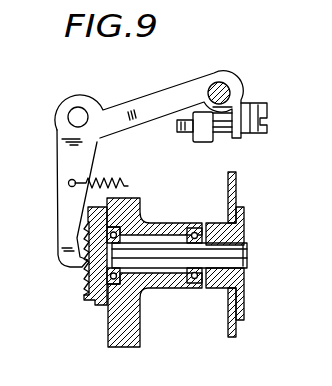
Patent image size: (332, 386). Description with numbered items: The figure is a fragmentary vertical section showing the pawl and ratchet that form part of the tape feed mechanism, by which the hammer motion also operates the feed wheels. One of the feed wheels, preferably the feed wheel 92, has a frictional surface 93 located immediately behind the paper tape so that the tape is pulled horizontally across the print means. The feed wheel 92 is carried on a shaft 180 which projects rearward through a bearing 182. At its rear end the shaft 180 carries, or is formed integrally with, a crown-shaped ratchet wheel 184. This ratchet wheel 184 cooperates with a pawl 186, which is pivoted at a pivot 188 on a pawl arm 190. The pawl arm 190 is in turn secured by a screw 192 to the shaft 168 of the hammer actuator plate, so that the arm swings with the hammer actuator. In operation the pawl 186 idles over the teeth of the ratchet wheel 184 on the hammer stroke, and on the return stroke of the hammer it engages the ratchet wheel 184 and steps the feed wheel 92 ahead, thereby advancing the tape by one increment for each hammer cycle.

The feed wheel 92 is at (227, 197).
The frictional surface 93 is at (238, 205).
The shaft of the hammer actuator plate 168 is at (230, 88).
The shaft 180 is at (248, 253).
The bearing 182 is at (164, 288).
The crown-shaped ratchet wheel 184 is at (84, 284).
The pawl 186 is at (58, 211).
The pivot 188 is at (80, 116).
The pawl arm 190 is at (152, 121).
The screw 192 is at (250, 104).